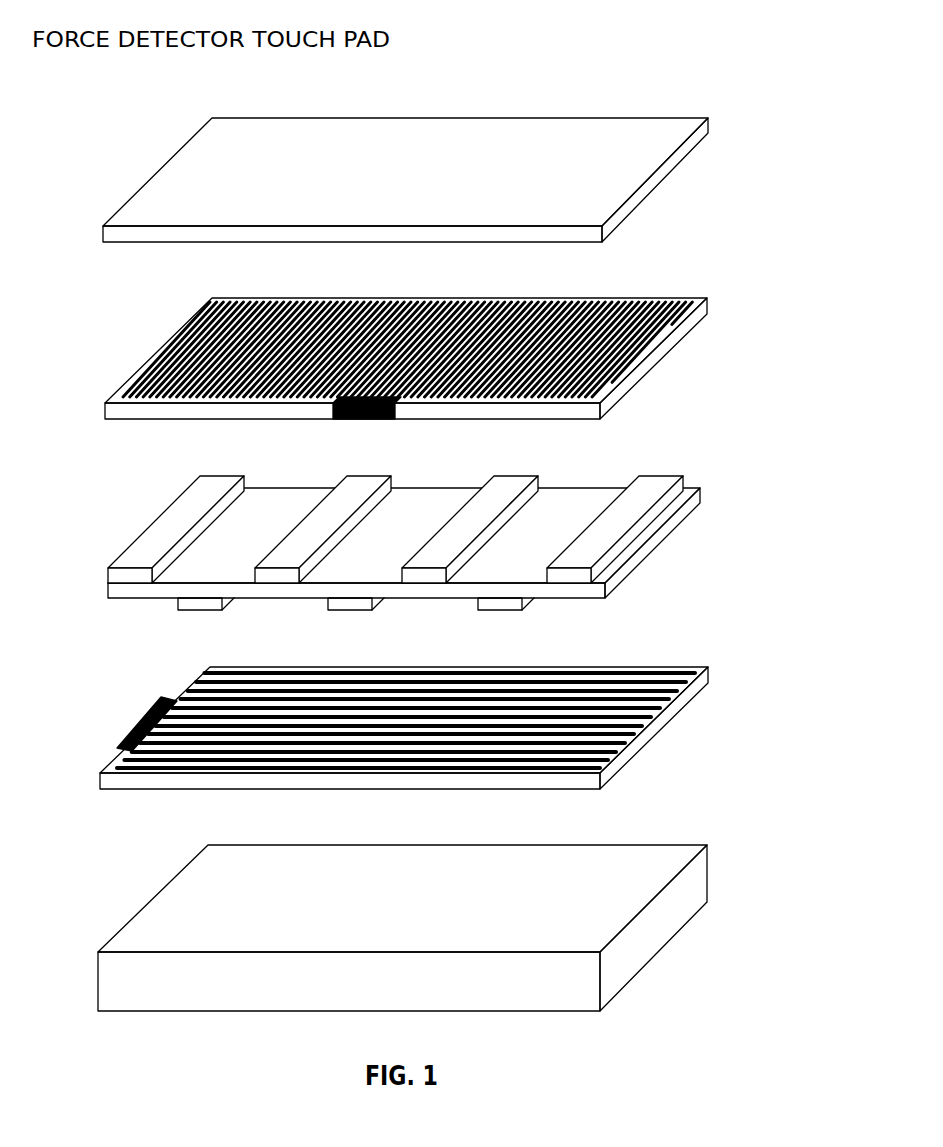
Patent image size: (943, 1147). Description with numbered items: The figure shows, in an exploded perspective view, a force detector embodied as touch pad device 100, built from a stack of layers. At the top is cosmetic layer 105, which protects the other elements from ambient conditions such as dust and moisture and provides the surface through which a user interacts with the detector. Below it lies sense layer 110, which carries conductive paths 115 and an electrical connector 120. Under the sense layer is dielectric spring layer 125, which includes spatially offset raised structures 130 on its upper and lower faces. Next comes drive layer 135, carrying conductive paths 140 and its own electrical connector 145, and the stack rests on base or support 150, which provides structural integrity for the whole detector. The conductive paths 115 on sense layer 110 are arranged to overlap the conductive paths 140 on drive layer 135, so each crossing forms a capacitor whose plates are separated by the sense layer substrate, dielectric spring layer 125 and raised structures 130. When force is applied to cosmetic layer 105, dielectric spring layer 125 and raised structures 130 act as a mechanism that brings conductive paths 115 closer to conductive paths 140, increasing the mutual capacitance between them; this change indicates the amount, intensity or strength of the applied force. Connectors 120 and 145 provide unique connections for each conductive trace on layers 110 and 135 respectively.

The touch pad device 100 is at (122, 139).
The cosmetic layer 105 is at (413, 189).
The sense layer 110 is at (444, 351).
The conductive paths 115 is at (187, 323).
The electrical connector 120 is at (362, 422).
The dielectric spring layer 125 is at (433, 543).
The raised structures 130 is at (150, 538).
The drive layer 135 is at (431, 703).
The conductive paths 140 is at (655, 708).
The electrical connector 145 is at (143, 720).
The base or support 150 is at (368, 996).